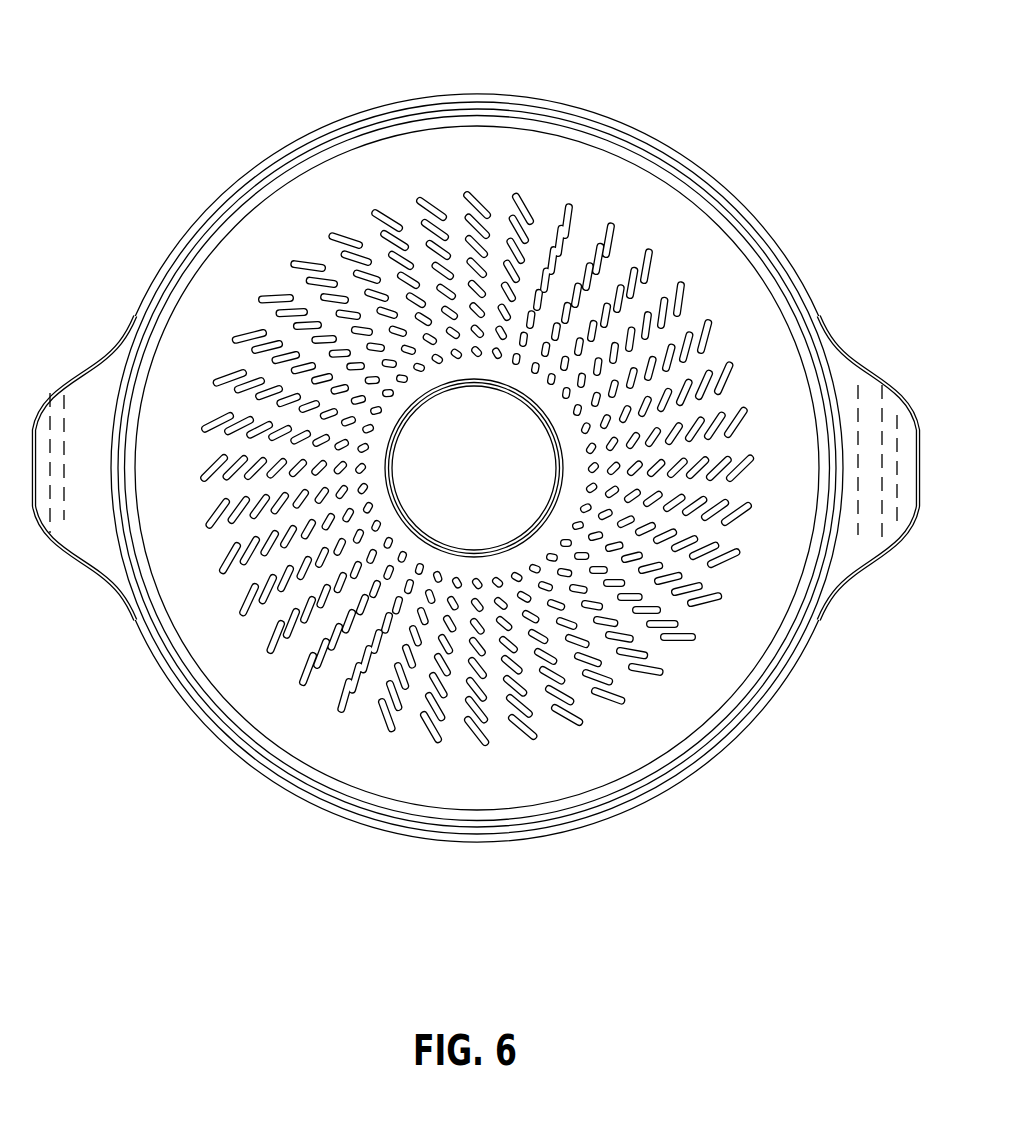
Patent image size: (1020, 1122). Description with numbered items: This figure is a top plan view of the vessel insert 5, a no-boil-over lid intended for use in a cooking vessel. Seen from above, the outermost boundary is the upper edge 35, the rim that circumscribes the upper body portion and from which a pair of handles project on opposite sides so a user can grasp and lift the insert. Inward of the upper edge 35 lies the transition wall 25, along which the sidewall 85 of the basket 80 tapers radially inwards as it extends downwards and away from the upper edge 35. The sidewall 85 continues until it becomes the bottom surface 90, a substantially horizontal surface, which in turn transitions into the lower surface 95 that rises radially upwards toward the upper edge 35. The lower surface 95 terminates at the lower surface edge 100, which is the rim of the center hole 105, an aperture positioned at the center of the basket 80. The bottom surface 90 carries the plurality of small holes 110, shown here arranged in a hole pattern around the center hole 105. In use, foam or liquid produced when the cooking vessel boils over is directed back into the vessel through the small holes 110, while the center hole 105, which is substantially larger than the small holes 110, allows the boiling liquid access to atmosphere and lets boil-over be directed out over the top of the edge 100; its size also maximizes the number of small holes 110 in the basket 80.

The vessel insert 5 is at (476, 433).
The transition wall 25 is at (786, 348).
The upper edge 35 is at (648, 140).
The basket 80 is at (688, 311).
The sidewall 85 is at (381, 178).
The bottom surface 90 is at (538, 222).
The lower surface 95 is at (486, 375).
The lower surface edge 100 is at (398, 520).
The center hole 105 is at (468, 472).
The small holes 110 is at (677, 645).